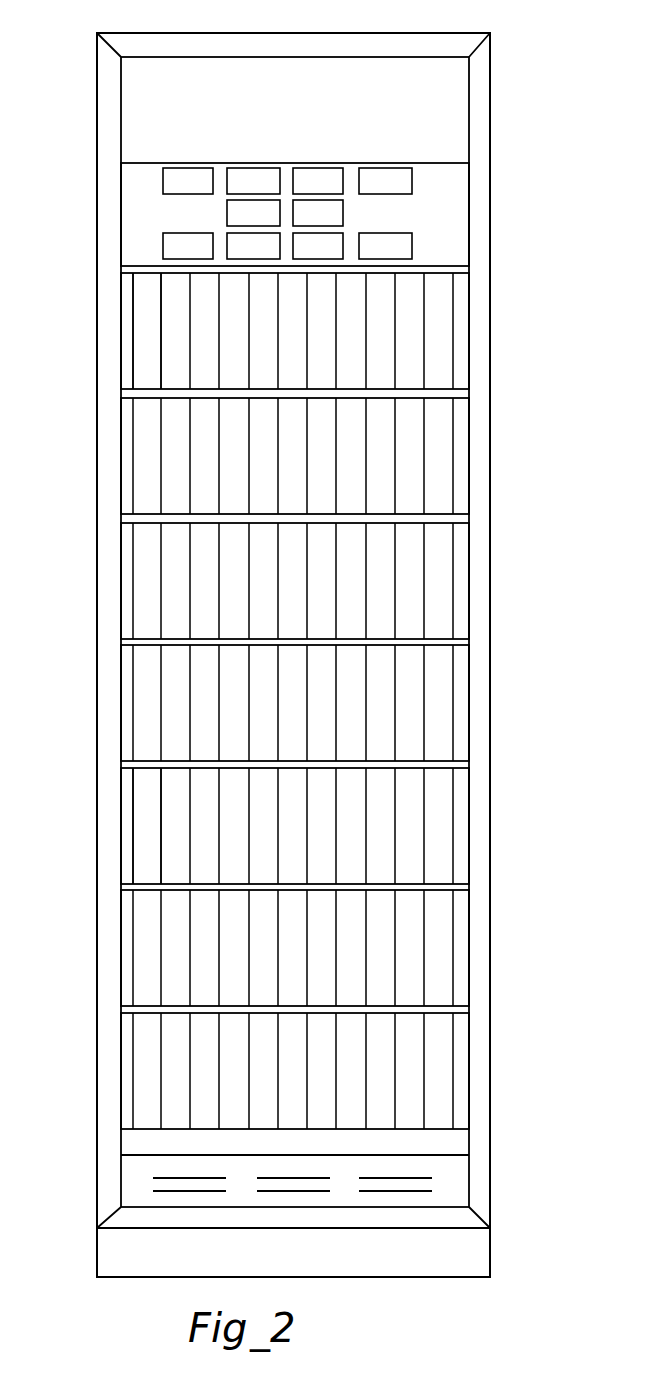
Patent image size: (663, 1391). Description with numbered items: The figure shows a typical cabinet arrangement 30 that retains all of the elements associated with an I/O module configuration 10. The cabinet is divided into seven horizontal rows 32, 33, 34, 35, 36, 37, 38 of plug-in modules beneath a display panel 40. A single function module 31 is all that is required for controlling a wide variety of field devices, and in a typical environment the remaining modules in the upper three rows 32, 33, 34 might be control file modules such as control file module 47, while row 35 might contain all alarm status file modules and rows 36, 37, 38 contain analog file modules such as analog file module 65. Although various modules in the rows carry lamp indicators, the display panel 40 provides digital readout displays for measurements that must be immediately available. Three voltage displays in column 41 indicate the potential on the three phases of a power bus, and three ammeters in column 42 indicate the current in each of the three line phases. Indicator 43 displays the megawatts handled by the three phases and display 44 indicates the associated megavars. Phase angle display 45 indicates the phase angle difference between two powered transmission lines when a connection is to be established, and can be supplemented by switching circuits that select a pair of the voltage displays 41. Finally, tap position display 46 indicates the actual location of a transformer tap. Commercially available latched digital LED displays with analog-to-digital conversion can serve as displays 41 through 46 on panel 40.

The I/O module configuration 10 is at (426, 24).
The cabinet arrangement 30 is at (484, 71).
The function module 31 is at (138, 362).
The row 32 is at (537, 319).
The row 33 is at (537, 439).
The row 34 is at (334, 581).
The row 35 is at (537, 688).
The row 36 is at (540, 805).
The row 37 is at (537, 941).
The row 38 is at (543, 1076).
The display panel 40 is at (465, 229).
The voltage displays 41 is at (261, 152).
The ammeters 42 is at (293, 137).
The megawatt indicator 43 is at (180, 167).
The megavar display 44 is at (184, 232).
The phase angle display 45 is at (373, 170).
The tap position display 46 is at (404, 236).
The control file module 47 is at (165, 310).
The analog file module 65 is at (142, 800).